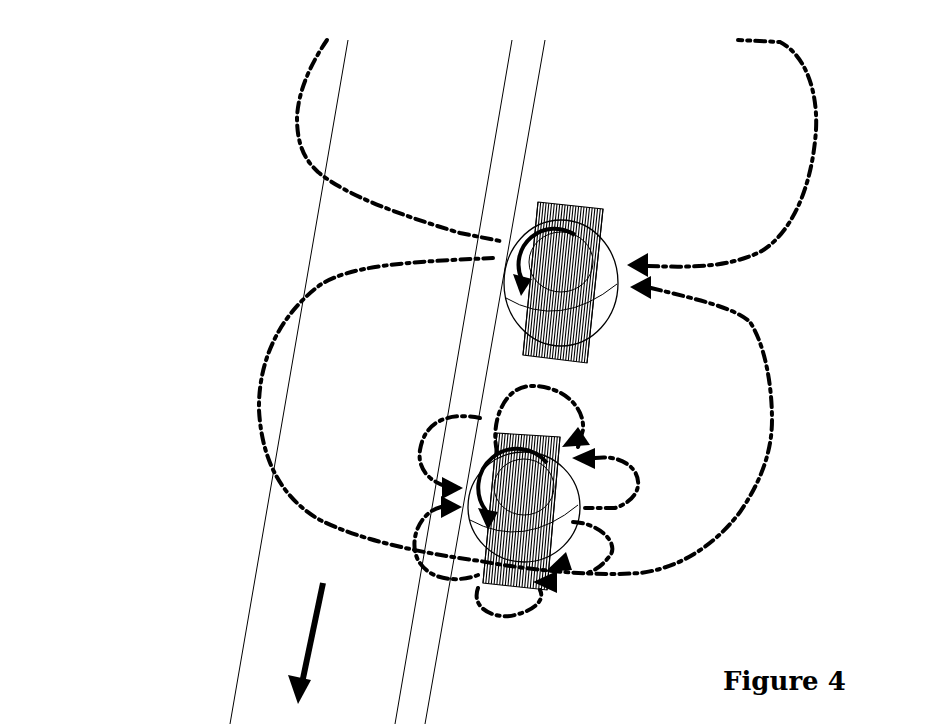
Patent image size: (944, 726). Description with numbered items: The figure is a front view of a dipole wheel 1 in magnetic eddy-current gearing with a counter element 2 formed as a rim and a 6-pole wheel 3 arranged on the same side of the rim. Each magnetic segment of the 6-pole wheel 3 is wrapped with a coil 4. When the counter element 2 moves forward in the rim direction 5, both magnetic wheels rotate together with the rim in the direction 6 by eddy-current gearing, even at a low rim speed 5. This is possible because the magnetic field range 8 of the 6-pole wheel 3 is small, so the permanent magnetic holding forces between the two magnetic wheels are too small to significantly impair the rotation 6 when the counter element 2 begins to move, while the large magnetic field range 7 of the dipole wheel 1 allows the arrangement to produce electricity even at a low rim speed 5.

The dipole wheel 1 is at (617, 302).
The counter element 2 is at (512, 118).
The 6-pole wheel 3 is at (575, 527).
The coil 4 is at (605, 205).
The forward direction 5 is at (300, 640).
The direction of rotation 6 is at (508, 253).
The magnetic field range of the dipole wheel 7 is at (287, 145).
The magnetic field range of the 6-pole wheel 8 is at (497, 390).